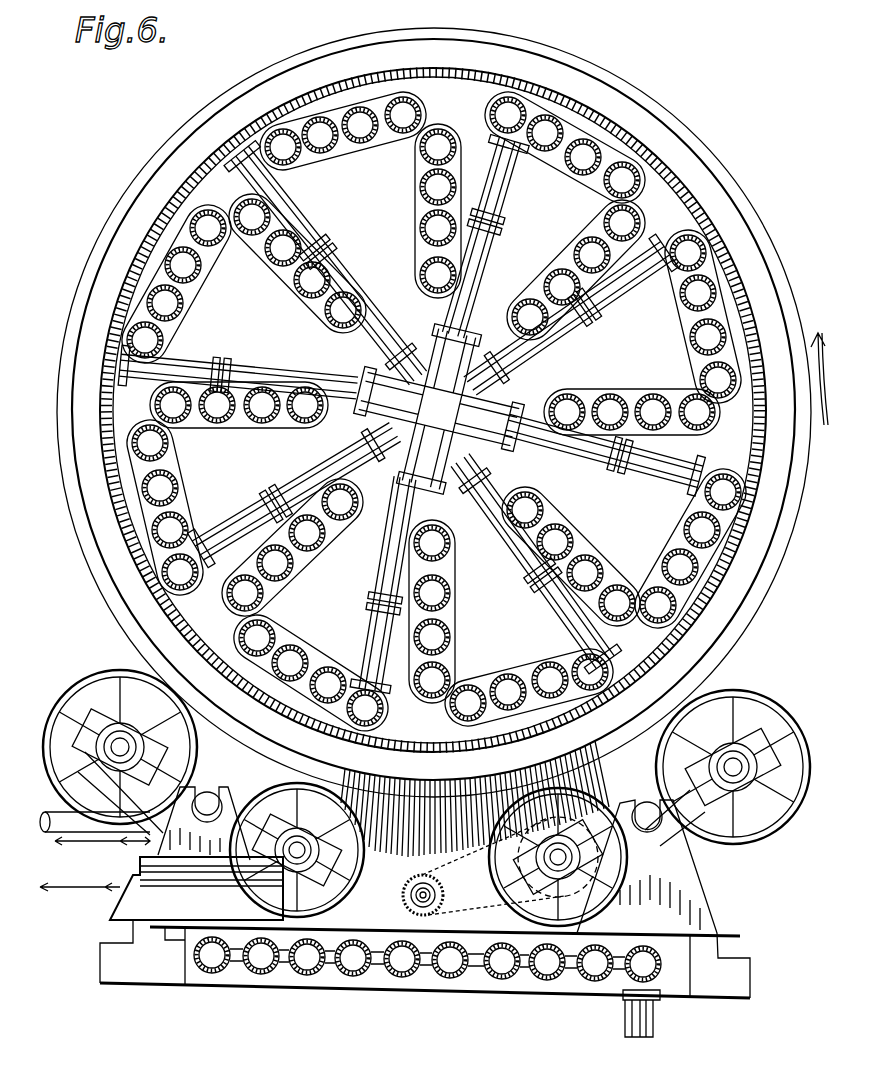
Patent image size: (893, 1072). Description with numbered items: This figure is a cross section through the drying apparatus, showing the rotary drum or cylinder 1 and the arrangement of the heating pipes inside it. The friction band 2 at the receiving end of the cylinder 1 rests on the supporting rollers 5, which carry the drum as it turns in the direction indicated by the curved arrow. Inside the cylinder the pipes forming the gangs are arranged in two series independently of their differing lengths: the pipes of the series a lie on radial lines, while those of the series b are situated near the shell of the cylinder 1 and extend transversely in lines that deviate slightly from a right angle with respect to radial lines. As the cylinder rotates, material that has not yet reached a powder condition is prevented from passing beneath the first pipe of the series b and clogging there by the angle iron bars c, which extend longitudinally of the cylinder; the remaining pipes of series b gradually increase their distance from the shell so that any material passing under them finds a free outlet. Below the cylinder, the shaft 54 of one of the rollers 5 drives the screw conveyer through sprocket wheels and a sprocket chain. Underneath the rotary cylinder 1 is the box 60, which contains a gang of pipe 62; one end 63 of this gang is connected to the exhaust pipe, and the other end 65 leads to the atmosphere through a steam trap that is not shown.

The rotary drum or cylinder 1 is at (120, 566).
The friction band 2 is at (760, 241).
The supporting rollers 5 is at (80, 694).
The shaft 54 is at (425, 918).
The box 60 is at (385, 978).
The gang of pipe 62 is at (503, 964).
The end of gang of pipe 63 is at (213, 972).
The end of gang of pipe 65 is at (661, 1013).
The series a of pipes a is at (278, 283).
The series b of pipes b is at (665, 536).
The angle iron bars c is at (130, 601).